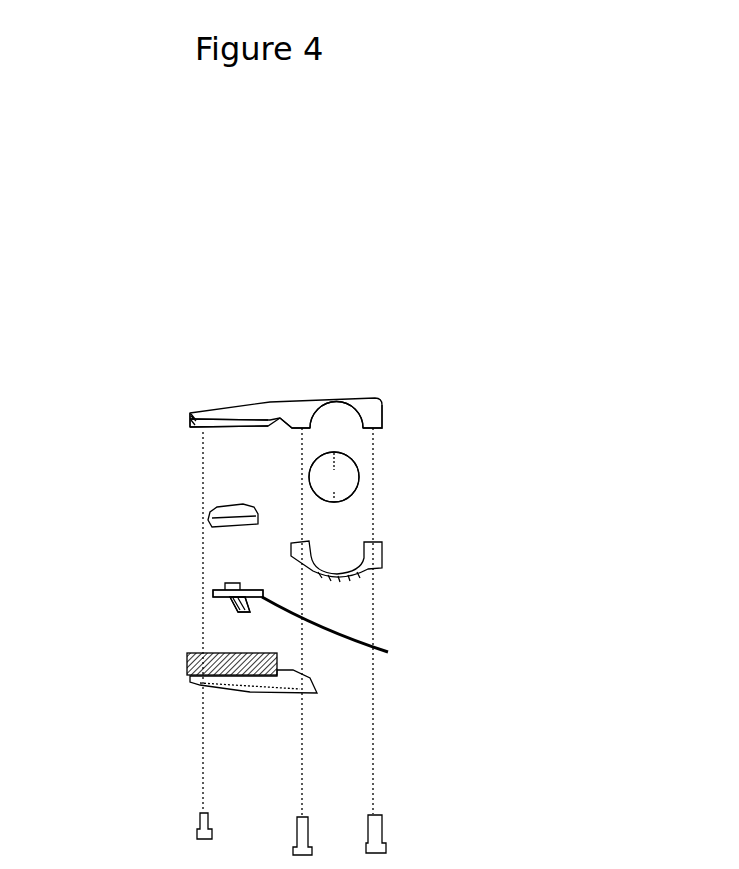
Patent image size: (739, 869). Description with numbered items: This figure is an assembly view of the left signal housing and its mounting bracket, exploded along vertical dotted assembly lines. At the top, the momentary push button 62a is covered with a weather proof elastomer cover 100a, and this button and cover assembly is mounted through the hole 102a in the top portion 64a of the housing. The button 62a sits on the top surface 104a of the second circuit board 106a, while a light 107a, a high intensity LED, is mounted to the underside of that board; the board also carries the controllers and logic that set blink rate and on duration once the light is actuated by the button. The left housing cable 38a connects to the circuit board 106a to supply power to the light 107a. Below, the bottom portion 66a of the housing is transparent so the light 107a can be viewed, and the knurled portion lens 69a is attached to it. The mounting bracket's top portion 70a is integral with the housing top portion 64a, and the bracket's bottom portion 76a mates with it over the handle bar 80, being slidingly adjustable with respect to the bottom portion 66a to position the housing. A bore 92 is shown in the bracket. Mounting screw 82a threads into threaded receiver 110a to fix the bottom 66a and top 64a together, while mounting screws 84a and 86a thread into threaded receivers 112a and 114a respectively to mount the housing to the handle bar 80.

The left housing cable 38a is at (388, 652).
The momentary push button 62a is at (213, 593).
The top portion 64a is at (190, 415).
The bottom portion 66a is at (238, 697).
The knurled portion lens 69a is at (187, 668).
The top portion of the mounting bracket 70a is at (371, 403).
The bottom portion of the mounting bracket 76a is at (373, 558).
The handle bar 80 is at (368, 497).
The mounting screw 82a is at (197, 825).
The mounting screw 84a is at (308, 820).
The mounting screw 86a is at (380, 827).
The bore 92 is at (334, 477).
The weather proof elastomer cover 100a is at (208, 524).
The hole 102a is at (227, 400).
The top surface 104a is at (252, 590).
The second circuit board 106a is at (222, 590).
The light 107a is at (237, 600).
The threaded receiver 110a is at (193, 436).
The threaded receiver 112a is at (298, 428).
The threaded receiver 114a is at (377, 430).